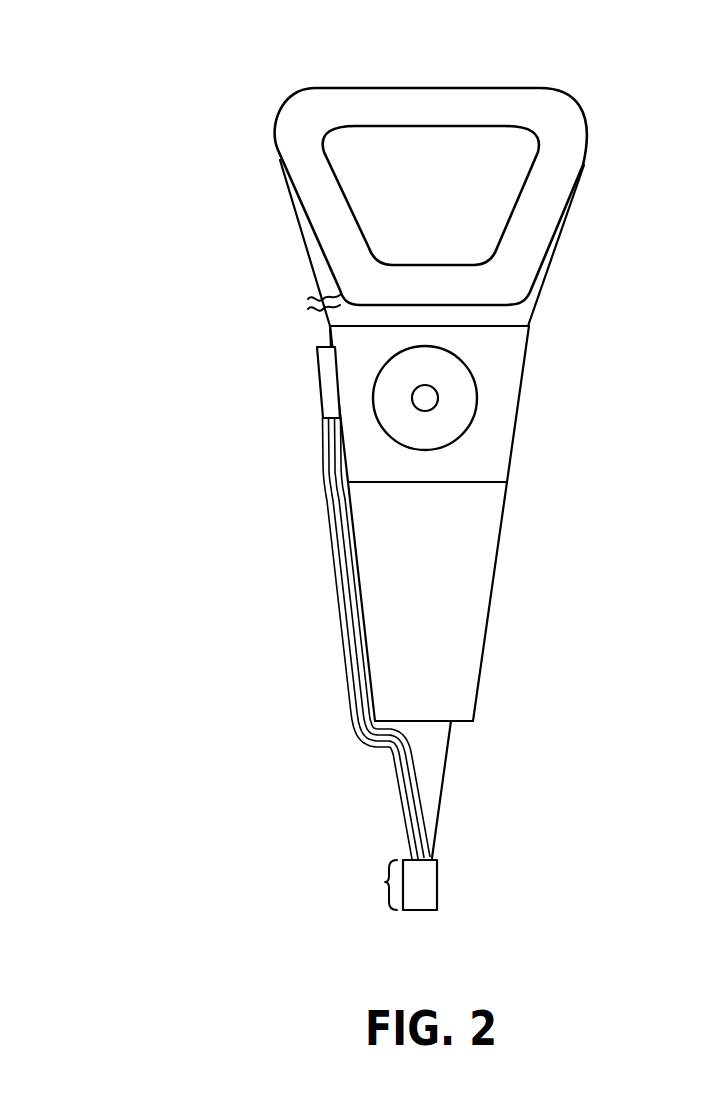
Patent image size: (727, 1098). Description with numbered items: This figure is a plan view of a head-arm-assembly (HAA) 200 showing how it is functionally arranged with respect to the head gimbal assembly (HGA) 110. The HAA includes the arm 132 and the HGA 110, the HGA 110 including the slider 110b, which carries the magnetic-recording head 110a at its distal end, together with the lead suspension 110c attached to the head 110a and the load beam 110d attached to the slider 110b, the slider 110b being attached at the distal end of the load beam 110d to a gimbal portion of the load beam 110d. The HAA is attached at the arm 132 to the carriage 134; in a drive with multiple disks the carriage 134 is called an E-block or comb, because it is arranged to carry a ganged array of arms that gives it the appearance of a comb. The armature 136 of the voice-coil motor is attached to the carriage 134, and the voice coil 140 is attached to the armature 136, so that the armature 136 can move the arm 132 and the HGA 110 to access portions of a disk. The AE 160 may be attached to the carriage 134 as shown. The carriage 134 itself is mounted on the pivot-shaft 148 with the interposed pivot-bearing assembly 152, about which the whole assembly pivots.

The sensor probe assembly 200 is at (90, 68).
The voice coil 140 is at (327, 218).
The armature 136 is at (327, 282).
The carriage 134 is at (474, 401).
The arm 132 is at (420, 560).
The pivot-shaft 148 is at (428, 395).
The pivot-bearing assembly 152 is at (458, 407).
The AE 160 is at (328, 390).
The head gimbal assembly 110 is at (295, 664).
The magnetic-recording head 110a is at (412, 898).
The slider 110b is at (387, 882).
The lead suspension 110c is at (402, 797).
The load beam 110d is at (422, 760).